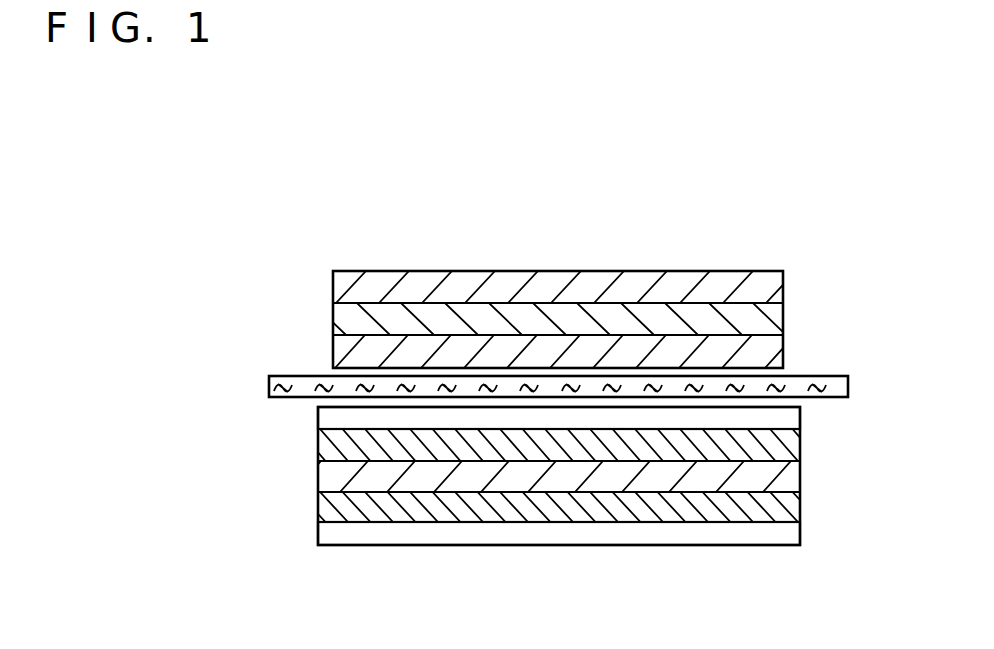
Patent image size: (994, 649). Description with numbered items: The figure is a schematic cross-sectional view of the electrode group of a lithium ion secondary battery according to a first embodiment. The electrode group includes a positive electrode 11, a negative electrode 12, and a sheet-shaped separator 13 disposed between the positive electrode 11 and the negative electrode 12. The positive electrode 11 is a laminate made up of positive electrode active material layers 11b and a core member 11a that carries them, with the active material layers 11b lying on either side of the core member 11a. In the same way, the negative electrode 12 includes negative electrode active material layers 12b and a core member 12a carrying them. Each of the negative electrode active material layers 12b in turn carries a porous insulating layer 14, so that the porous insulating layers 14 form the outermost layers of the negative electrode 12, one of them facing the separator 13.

The positive electrode 11 is at (615, 294).
The core member 11a is at (778, 310).
The positive electrode active material layers 11b is at (783, 277).
The negative electrode 12 is at (616, 501).
The core member 12a is at (767, 478).
The negative electrode active material layers 12b is at (778, 447).
The separator 13 is at (848, 387).
The porous insulating layer 14 is at (783, 417).